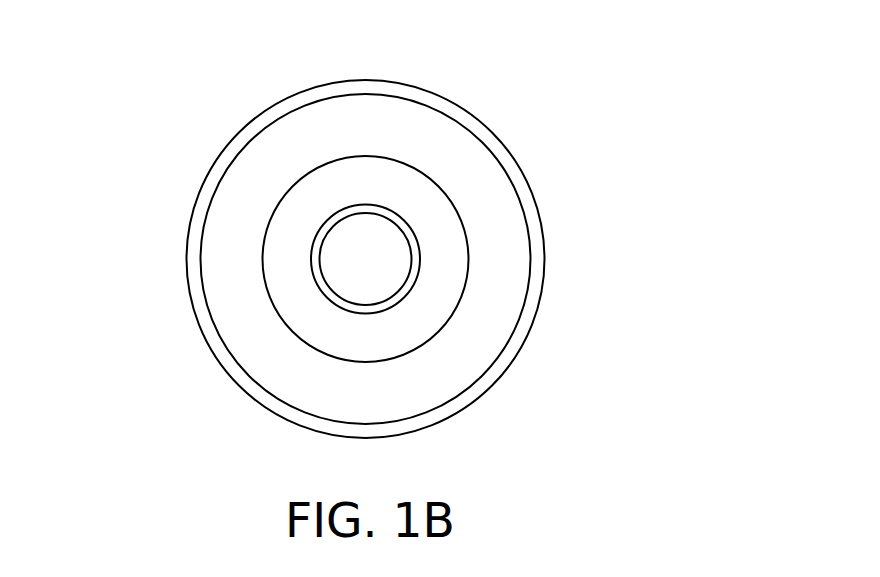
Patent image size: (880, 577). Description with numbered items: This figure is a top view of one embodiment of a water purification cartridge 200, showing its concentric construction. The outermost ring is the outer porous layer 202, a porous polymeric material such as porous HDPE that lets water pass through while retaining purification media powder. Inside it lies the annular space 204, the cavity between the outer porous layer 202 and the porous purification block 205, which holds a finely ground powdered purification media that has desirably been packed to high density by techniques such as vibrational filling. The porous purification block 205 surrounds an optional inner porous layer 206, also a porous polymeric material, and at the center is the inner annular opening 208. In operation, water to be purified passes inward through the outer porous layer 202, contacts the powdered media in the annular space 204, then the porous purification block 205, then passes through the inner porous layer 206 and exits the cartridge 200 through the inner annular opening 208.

The cartridge 200 is at (467, 407).
The outer porous layer 202 is at (540, 252).
The annular space 204 is at (478, 220).
The porous purification block 205 is at (290, 282).
The inner porous layer 206 is at (377, 208).
The inner annular opening 208 is at (365, 253).